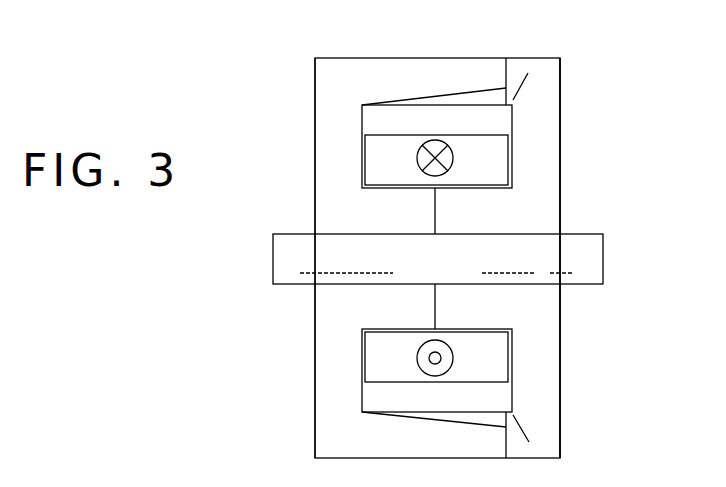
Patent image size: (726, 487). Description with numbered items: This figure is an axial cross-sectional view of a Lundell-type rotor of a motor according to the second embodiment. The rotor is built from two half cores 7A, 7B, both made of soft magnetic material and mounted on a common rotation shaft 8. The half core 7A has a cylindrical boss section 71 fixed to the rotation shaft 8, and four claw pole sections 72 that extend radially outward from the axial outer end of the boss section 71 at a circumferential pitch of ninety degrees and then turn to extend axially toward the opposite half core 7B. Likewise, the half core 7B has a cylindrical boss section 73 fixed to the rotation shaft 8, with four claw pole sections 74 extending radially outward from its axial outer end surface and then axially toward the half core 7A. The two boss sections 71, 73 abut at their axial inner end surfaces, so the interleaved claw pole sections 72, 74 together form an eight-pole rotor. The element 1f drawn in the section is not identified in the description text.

The half core 7A is at (306, 52).
The half core 7B is at (568, 52).
The boss section 71 is at (340, 210).
The claw pole section 72 is at (428, 72).
The boss section 73 is at (537, 212).
The claw pole section 74 is at (510, 78).
The coil 1f is at (380, 157).
The rotation shaft 8 is at (595, 252).